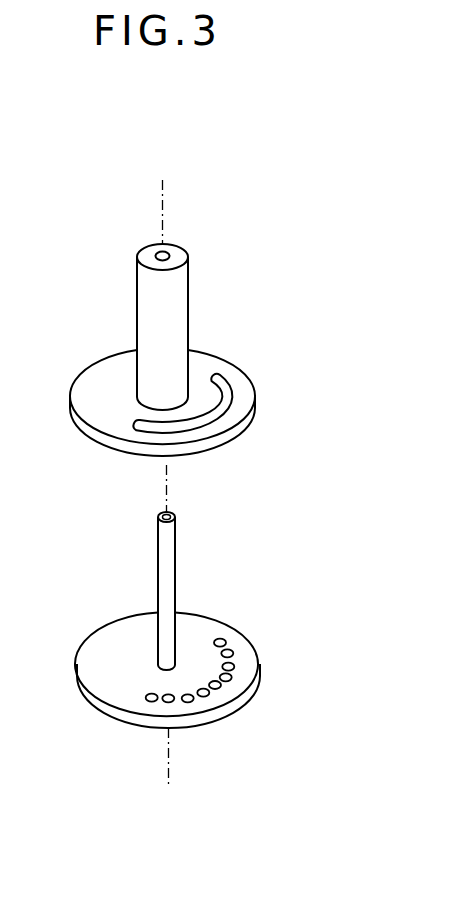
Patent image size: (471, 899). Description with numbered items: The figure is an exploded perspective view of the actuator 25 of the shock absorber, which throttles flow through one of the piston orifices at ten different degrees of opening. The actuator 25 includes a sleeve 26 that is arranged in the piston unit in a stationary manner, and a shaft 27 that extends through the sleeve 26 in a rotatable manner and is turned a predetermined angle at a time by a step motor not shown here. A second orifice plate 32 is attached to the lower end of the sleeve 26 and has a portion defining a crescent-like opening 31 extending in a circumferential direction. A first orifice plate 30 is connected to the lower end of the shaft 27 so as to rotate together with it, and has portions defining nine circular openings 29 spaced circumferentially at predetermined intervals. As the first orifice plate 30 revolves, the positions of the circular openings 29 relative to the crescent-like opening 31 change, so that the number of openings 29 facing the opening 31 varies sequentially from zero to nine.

The actuator 25 is at (278, 306).
The sleeve 26 is at (177, 307).
The shaft 27 is at (168, 573).
The circular openings 29 is at (230, 652).
The first orifice plate 30 is at (115, 643).
The crescent-like opening 31 is at (227, 397).
The second orifice plate 32 is at (95, 378).